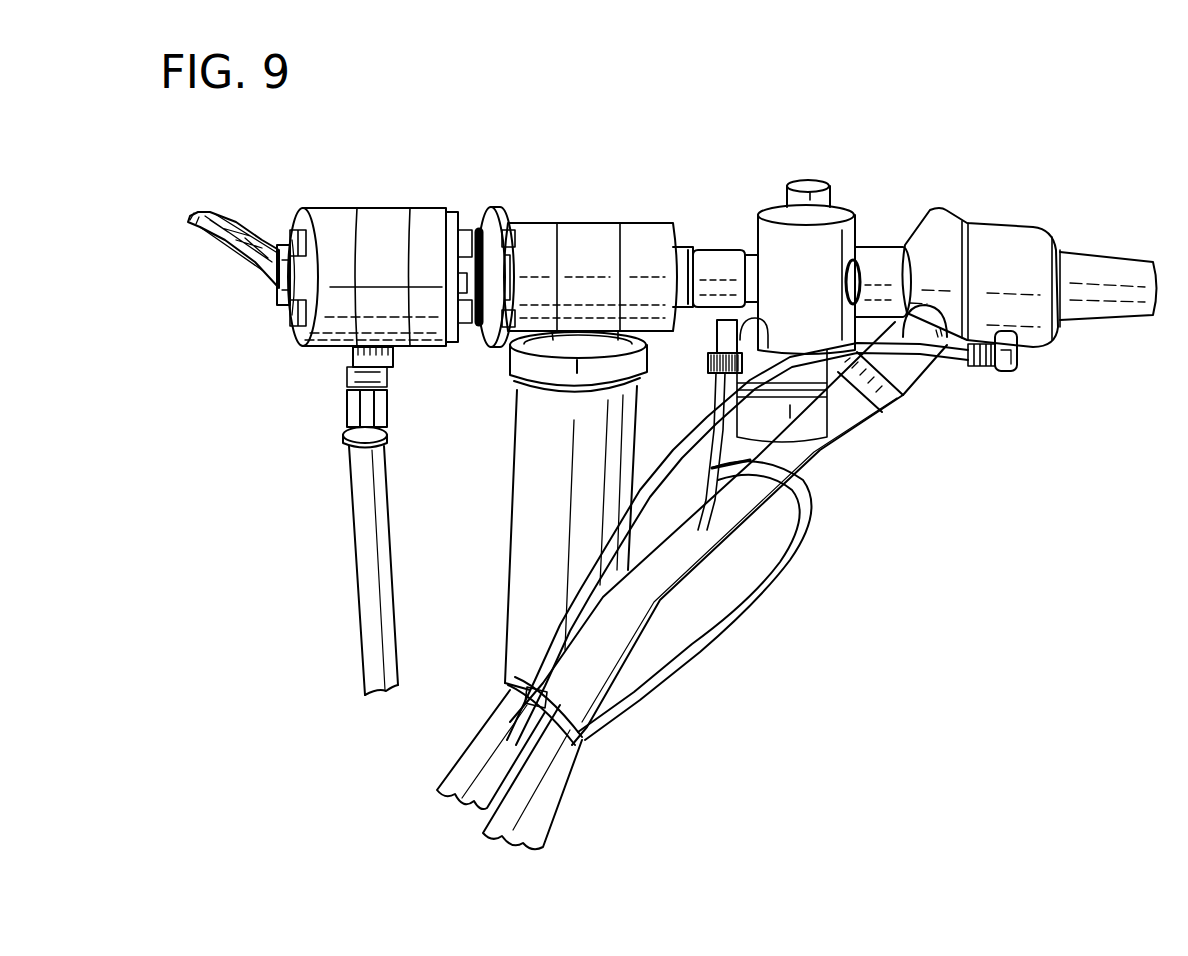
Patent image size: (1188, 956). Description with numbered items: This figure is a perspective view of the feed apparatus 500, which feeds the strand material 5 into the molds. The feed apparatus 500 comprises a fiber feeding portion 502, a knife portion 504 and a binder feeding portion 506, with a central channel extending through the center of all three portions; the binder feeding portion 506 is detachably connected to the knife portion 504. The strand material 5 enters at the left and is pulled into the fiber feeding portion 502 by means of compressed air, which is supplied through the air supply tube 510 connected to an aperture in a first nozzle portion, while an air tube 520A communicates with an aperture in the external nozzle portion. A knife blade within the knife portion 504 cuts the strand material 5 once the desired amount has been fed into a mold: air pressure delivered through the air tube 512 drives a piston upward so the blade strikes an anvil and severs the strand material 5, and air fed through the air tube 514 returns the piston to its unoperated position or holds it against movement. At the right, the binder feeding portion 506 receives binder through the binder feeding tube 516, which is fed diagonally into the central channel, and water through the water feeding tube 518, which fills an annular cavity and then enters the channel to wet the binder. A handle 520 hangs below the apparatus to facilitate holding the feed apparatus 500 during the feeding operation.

The strand material 5 is at (243, 208).
The feed apparatus 500 is at (1033, 137).
The fiber feeding portion 502 is at (495, 161).
The knife portion 504 is at (817, 158).
The binder feeding portion 506 is at (1047, 210).
The air supply tube 510 is at (349, 487).
The air tube 512 is at (790, 557).
The air tube 514 is at (735, 462).
The binder feeding tube 516 is at (852, 431).
The water feeding tube 518 is at (953, 360).
The handle 520 is at (513, 468).
The air tube 520A is at (563, 778).